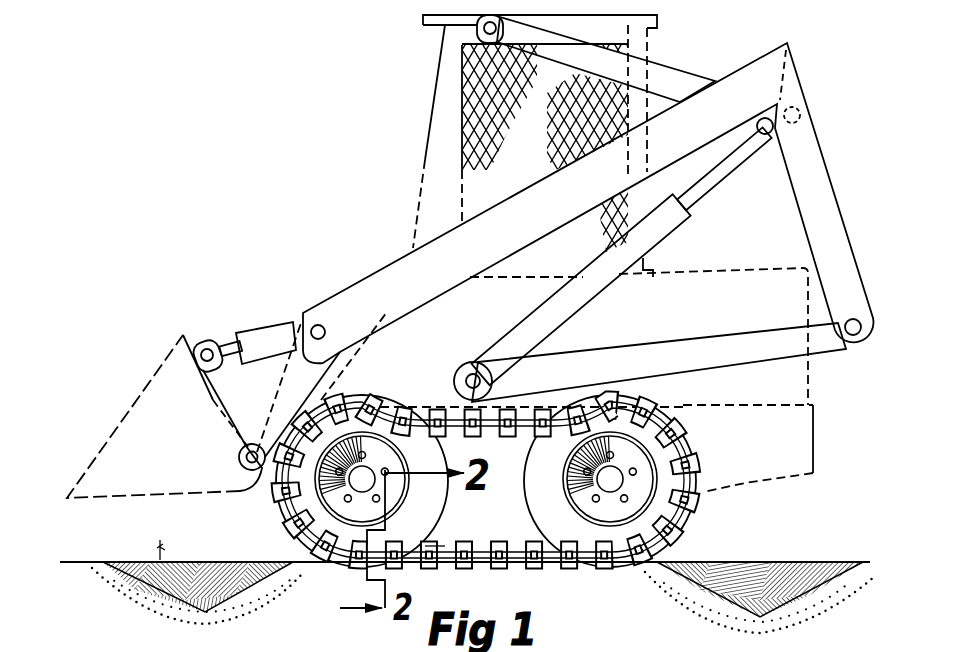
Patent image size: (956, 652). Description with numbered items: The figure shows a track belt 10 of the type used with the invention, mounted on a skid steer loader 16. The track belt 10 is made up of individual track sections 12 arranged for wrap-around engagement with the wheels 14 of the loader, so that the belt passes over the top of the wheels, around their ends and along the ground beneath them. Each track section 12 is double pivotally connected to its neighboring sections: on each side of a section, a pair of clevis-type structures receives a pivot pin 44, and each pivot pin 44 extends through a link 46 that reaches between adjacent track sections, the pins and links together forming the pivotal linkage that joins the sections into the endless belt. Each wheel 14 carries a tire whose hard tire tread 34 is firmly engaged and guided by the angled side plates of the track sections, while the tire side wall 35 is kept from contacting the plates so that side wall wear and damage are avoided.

The track belt 10 is at (484, 474).
The track section 12 is at (397, 396).
The wheel 14 is at (514, 512).
The skid steer loader 16 is at (408, 93).
The tire tread 34 is at (430, 546).
The tire side wall 35 is at (384, 497).
The pivot pin 44 is at (677, 432).
The link 46 is at (700, 482).